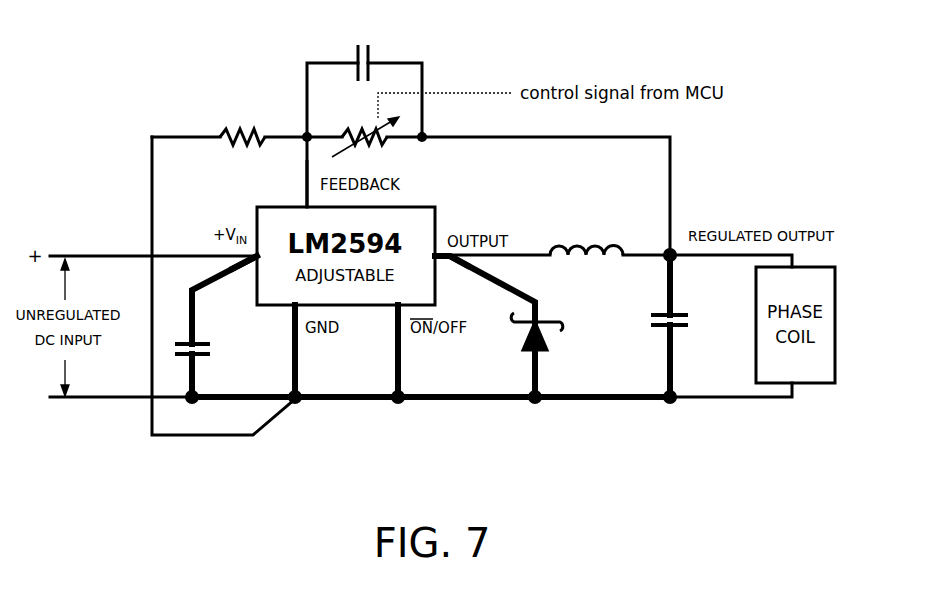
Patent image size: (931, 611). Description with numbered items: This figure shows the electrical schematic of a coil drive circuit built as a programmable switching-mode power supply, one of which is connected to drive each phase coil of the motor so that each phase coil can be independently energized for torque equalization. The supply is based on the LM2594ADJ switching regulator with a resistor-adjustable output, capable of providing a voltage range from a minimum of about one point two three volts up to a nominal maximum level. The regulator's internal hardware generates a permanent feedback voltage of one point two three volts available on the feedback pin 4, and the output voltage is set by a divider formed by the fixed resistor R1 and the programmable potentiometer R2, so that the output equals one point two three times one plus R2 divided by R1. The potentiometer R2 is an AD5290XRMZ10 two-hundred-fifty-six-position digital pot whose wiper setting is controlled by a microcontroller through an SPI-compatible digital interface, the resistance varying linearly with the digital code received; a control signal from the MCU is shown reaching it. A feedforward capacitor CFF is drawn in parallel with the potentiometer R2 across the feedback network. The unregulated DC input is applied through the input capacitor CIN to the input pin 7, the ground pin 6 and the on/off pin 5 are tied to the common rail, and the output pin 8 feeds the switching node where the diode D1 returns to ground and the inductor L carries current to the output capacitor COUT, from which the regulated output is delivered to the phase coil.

The resistor R1 is at (242, 121).
The programmable potentiometer R2 is at (365, 127).
The feedforward capacitor CFF is at (361, 46).
The input capacitor CIN is at (216, 326).
The output capacitor COUT is at (691, 311).
The diode D1 is at (509, 326).
The inductor L is at (586, 269).
The pin 4 is at (294, 183).
The on/off pin 5 is at (388, 322).
The ground pin 6 is at (283, 322).
The input pin 7 is at (243, 278).
The output pin 8 is at (452, 278).